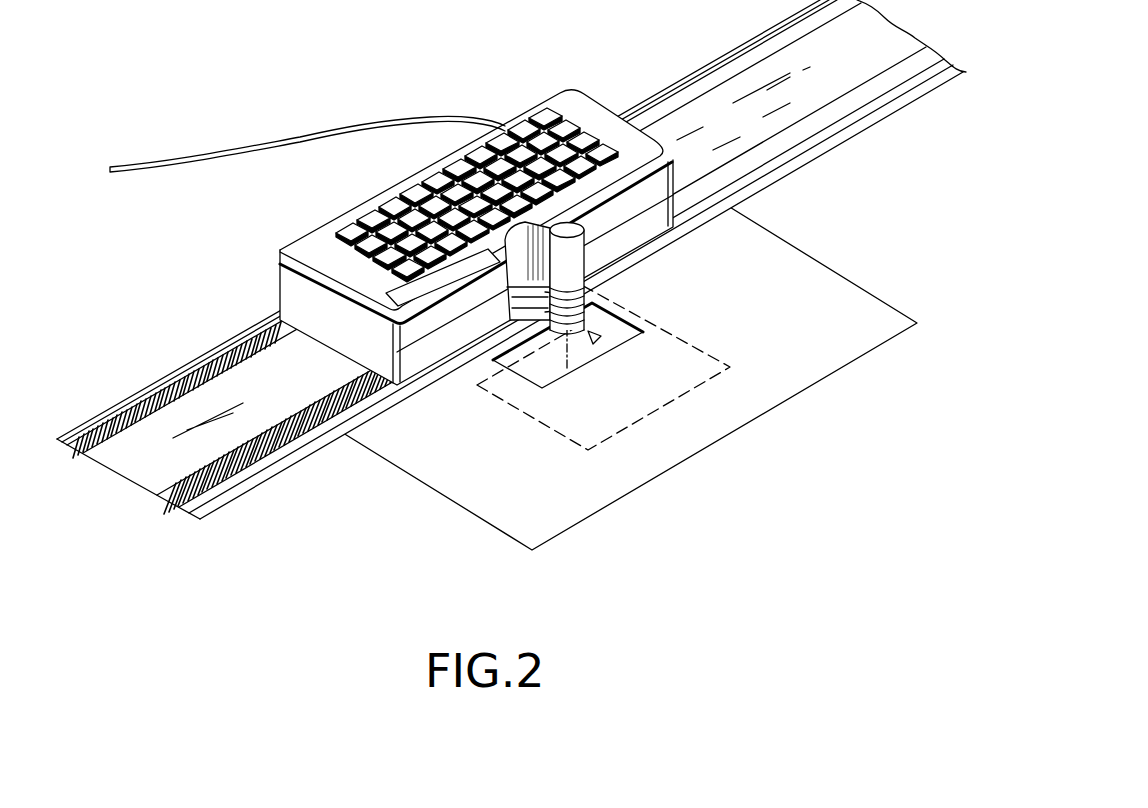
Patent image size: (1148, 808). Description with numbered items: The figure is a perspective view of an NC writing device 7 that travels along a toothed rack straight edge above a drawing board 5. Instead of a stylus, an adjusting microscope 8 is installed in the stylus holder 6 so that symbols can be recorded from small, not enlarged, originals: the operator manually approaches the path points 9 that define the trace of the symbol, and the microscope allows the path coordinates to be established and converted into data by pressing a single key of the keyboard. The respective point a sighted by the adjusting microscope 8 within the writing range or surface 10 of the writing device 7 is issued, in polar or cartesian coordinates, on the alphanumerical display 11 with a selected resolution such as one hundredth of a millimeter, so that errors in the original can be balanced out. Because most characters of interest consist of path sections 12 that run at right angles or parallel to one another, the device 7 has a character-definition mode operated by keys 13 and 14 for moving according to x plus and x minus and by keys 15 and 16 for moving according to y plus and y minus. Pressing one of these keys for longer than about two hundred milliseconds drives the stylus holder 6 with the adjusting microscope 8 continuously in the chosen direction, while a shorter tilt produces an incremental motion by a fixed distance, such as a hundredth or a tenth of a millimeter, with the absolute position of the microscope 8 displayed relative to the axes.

The drawing board 5 is at (800, 268).
The stylus holder 6 is at (543, 370).
The NC writing device 7 is at (391, 215).
The adjusting microscope 8 is at (585, 275).
The path points 9 is at (582, 337).
The writing range or surface 10 is at (715, 378).
The alphanumerical display 11 is at (397, 292).
The path sections 12 is at (600, 324).
The key 13 is at (353, 225).
The key 14 is at (548, 112).
The key 15 is at (390, 268).
The key 16 is at (604, 147).
The point of the adjusting microscope a is at (577, 341).